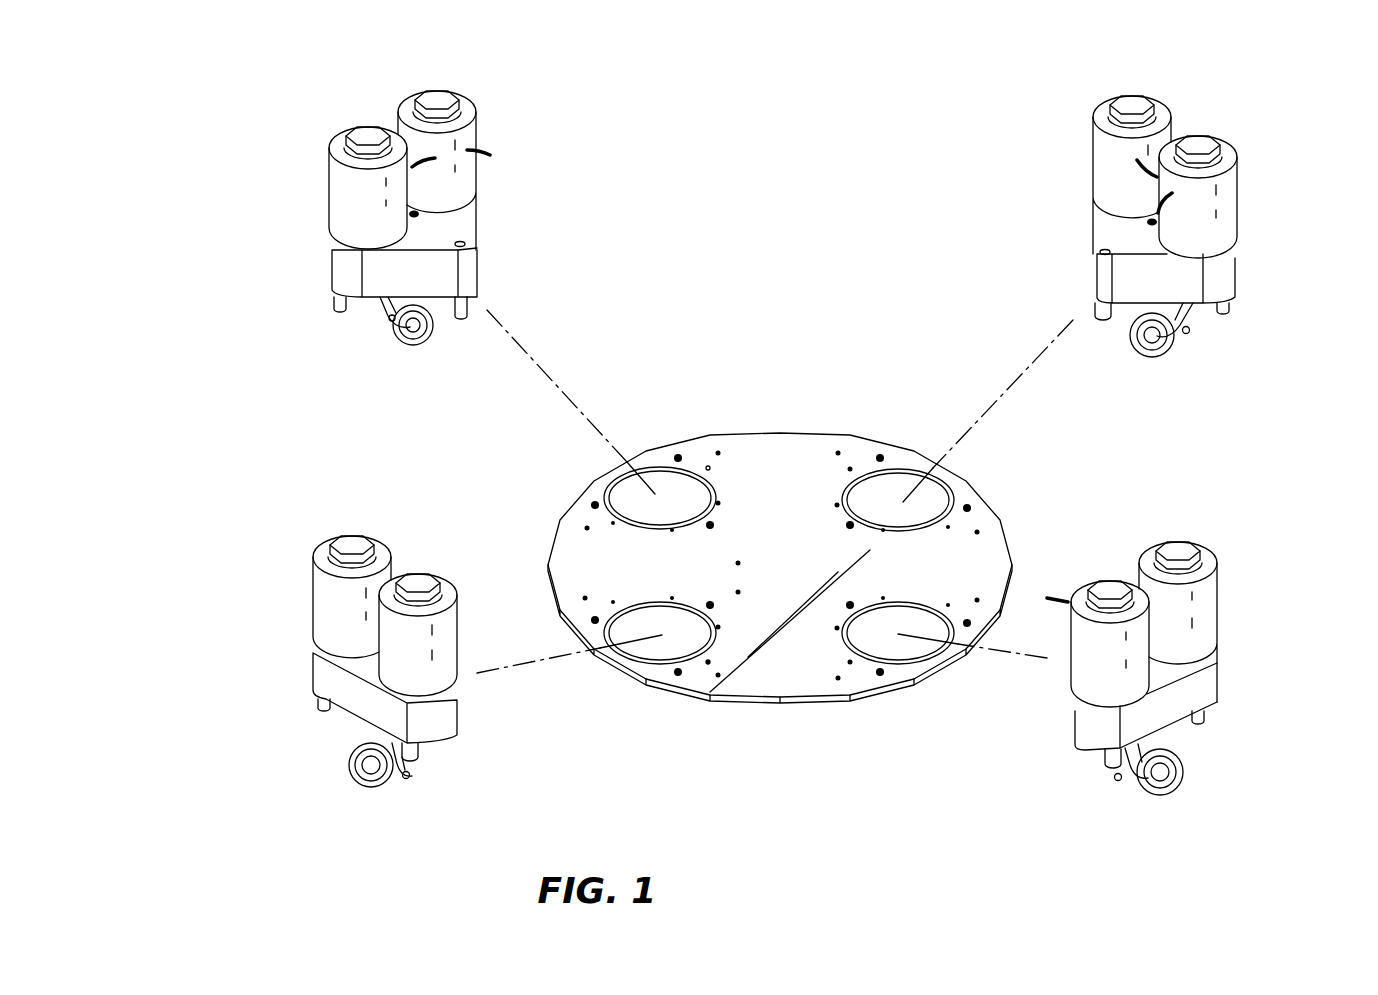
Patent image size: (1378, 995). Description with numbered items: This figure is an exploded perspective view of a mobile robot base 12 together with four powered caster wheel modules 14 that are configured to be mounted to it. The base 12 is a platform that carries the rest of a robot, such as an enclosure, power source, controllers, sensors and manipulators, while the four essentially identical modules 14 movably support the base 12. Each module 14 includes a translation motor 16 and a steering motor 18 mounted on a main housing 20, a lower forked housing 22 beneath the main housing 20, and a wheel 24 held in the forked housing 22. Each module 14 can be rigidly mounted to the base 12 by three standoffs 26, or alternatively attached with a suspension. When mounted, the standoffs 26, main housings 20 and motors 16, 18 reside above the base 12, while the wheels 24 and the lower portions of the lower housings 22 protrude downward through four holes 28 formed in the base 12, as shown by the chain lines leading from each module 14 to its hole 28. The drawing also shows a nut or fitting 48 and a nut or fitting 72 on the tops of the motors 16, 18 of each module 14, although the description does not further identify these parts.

The mobile robot base 12 is at (800, 560).
The powered caster wheel module 14 is at (256, 162).
The translation motor 16 is at (335, 205).
The steering motor 18 is at (472, 136).
The main housing 20 is at (462, 225).
The lower forked housing 22 is at (380, 310).
The wheel 24 is at (413, 345).
The standoff 26 is at (337, 297).
The hole 28 is at (662, 468).
The shaft nut 48 is at (443, 98).
The shaft nut 72 is at (363, 134).